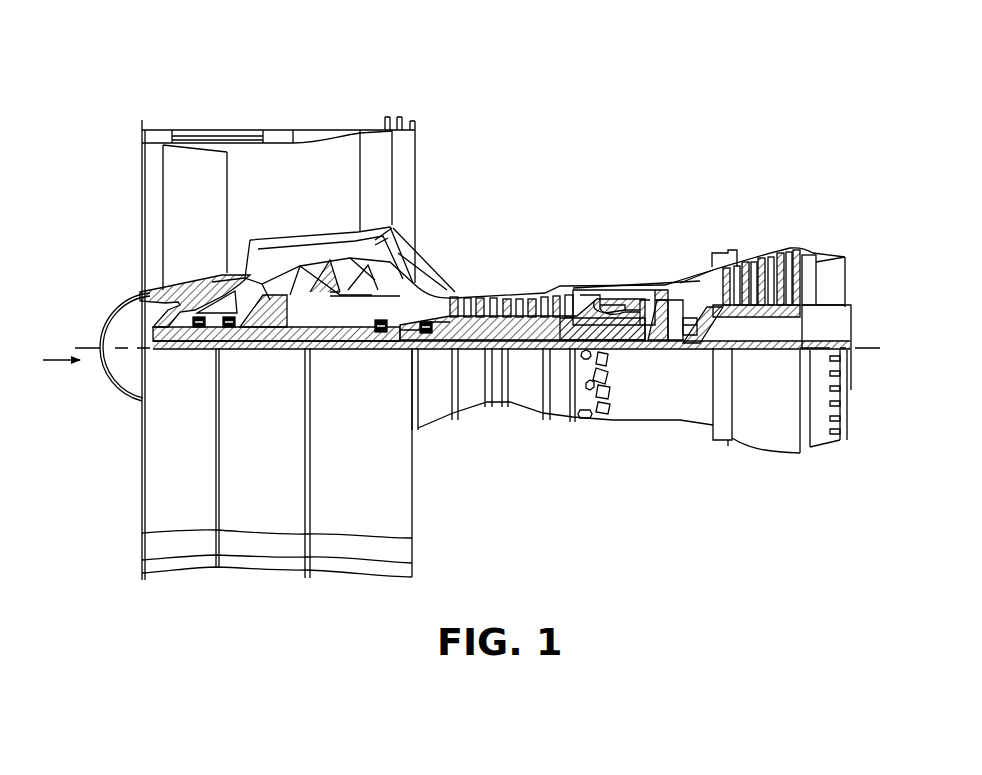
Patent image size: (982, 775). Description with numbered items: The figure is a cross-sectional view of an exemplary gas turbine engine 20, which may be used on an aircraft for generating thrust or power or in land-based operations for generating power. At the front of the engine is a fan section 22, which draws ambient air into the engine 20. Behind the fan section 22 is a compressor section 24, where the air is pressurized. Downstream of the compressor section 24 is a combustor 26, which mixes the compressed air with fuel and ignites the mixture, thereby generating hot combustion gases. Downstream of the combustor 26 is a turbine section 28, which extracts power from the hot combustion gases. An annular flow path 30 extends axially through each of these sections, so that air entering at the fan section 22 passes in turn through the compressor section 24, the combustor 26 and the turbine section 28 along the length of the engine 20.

The gas turbine engine 20 is at (673, 150).
The fan section 22 is at (299, 92).
The compressor section 24 is at (449, 276).
The combustor 26 is at (657, 266).
The turbine section 28 is at (810, 231).
The annular flow path 30 is at (53, 362).